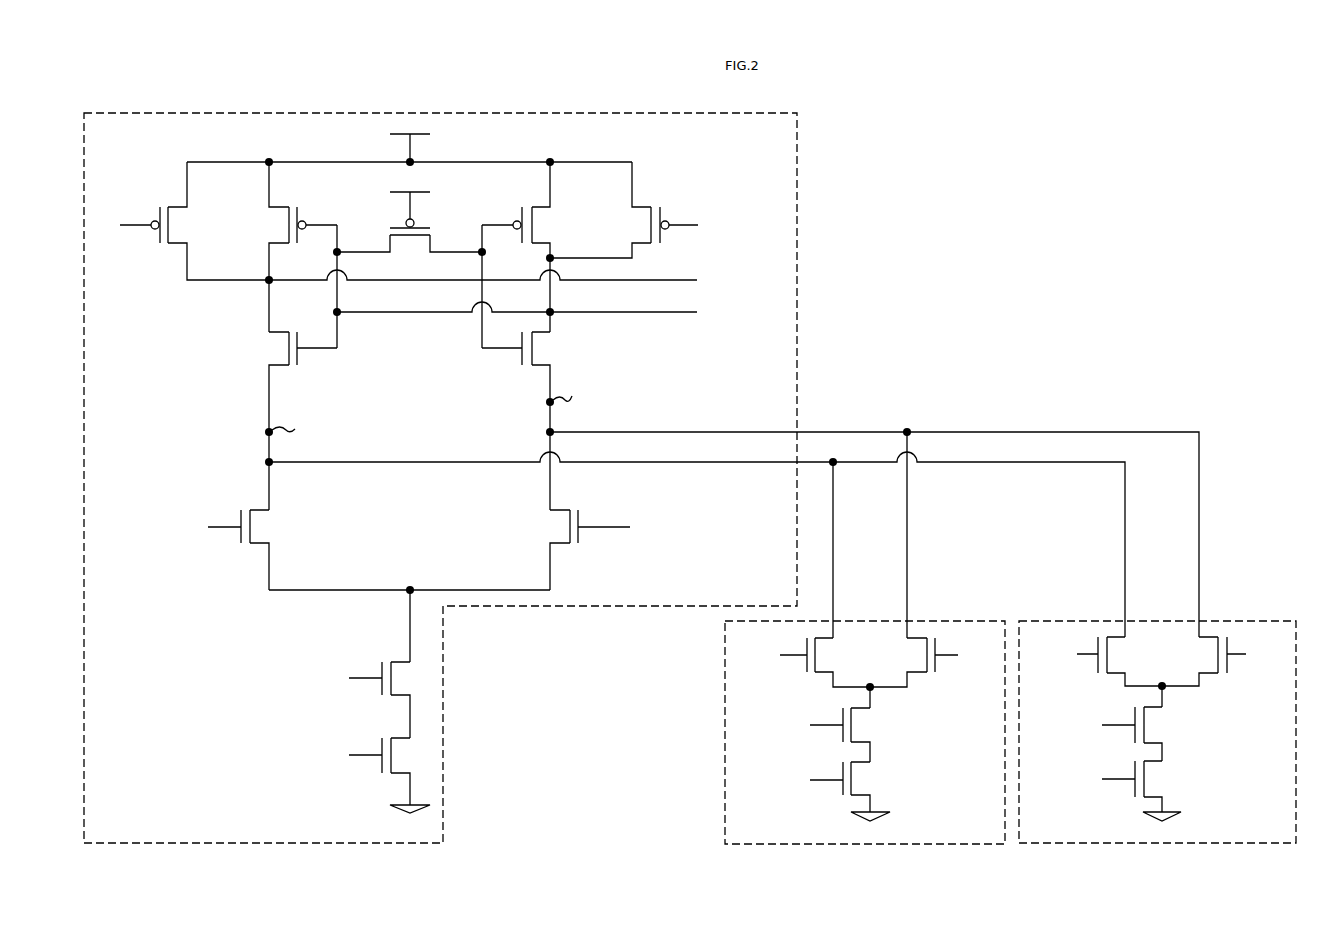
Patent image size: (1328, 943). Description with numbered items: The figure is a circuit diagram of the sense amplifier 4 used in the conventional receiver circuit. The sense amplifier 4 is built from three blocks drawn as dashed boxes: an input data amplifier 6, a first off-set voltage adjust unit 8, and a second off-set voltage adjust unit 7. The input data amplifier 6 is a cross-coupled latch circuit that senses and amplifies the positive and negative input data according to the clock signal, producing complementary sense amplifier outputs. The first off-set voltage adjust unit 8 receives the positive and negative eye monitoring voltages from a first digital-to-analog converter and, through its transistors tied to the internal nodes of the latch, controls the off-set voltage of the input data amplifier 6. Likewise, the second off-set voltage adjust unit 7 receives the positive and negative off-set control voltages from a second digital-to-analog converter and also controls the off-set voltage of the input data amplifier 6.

The sense amplifier 4 is at (1280, 118).
The input data amplifier 6 is at (797, 295).
The second off-set voltage adjust unit 7 is at (940, 620).
The first off-set voltage adjust unit 8 is at (1232, 621).